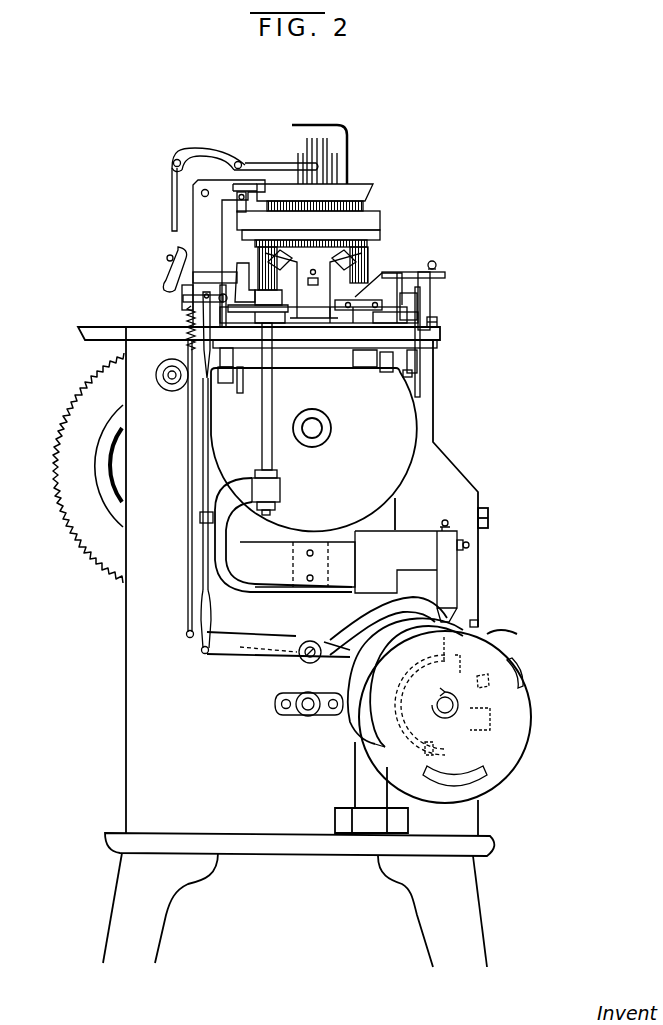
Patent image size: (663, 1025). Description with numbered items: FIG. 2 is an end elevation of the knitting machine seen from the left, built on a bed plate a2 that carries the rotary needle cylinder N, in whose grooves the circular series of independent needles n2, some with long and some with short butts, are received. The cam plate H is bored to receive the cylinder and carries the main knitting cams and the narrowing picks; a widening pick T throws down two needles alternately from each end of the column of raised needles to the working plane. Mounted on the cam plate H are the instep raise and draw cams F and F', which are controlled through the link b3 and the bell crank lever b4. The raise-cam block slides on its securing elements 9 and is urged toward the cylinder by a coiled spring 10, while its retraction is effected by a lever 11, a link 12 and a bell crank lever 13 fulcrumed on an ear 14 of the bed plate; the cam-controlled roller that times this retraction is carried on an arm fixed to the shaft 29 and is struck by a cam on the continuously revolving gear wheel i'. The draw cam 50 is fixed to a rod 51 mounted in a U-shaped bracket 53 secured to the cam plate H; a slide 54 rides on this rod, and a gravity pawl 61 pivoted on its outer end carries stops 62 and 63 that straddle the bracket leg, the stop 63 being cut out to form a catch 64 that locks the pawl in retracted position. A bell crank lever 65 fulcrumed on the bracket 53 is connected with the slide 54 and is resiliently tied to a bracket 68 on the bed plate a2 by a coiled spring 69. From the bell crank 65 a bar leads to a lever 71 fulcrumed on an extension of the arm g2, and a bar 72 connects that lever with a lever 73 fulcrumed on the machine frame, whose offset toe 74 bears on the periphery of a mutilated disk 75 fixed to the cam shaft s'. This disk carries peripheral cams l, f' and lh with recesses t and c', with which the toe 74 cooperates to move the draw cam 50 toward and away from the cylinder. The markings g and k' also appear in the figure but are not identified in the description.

The independent needles n2 is at (343, 188).
The widening pick T is at (305, 258).
The needle cylinder N is at (372, 258).
The instep draw cam F' is at (383, 261).
The instep raise cam F is at (416, 268).
The securing elements 9 is at (385, 292).
The lever 11 is at (434, 266).
The link 12 is at (445, 274).
The bell crank lever 13 is at (431, 293).
The cam plate H is at (420, 310).
The ear 14 is at (437, 325).
The bed plate a2 is at (440, 337).
The bell crank lever b4 is at (417, 352).
The link b3 is at (415, 367).
The draw cam 50 is at (232, 253).
The slide 54 is at (208, 252).
The gravity pawl 61 is at (168, 256).
The rod 51 is at (182, 252).
The stop 62 is at (190, 278).
The stop 63 is at (181, 291).
The catch 64 is at (180, 298).
The U-shaped bracket 53 is at (196, 300).
The coiled spring 69 is at (195, 325).
The bell crank lever 65 is at (188, 338).
The bracket 68 is at (156, 372).
The shaft 29 is at (172, 390).
The coiled spring 10 is at (200, 450).
The lever 71 is at (200, 525).
The gear wheel i' is at (88, 472).
The bar 72 is at (202, 612).
The arm g2 is at (277, 574).
The lever 73 is at (238, 658).
The offset toe 74 is at (413, 604).
The recess c' is at (497, 612).
The cam lh is at (543, 661).
The mutilated disk 75 is at (520, 708).
The recess t is at (537, 742).
The cam f' is at (472, 794).
The shaft s' is at (445, 716).
The cam l is at (342, 731).
The cam path g is at (397, 718).
The pedestal k' is at (352, 775).